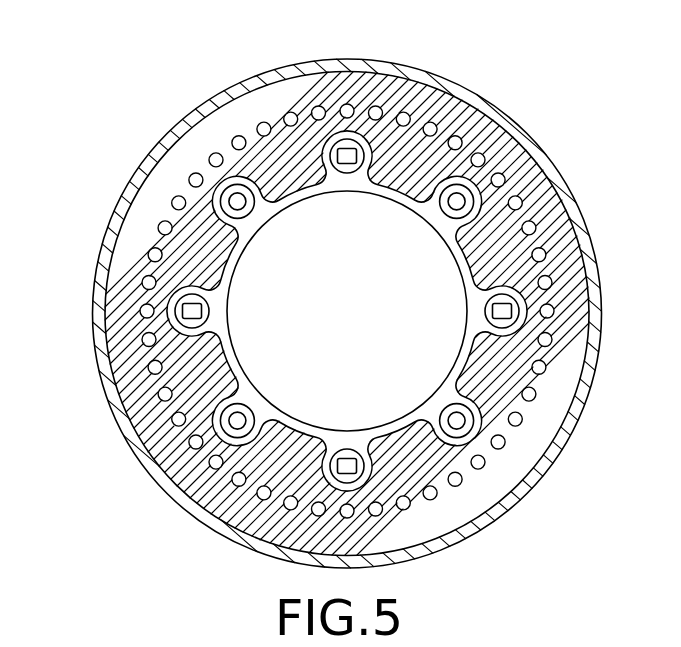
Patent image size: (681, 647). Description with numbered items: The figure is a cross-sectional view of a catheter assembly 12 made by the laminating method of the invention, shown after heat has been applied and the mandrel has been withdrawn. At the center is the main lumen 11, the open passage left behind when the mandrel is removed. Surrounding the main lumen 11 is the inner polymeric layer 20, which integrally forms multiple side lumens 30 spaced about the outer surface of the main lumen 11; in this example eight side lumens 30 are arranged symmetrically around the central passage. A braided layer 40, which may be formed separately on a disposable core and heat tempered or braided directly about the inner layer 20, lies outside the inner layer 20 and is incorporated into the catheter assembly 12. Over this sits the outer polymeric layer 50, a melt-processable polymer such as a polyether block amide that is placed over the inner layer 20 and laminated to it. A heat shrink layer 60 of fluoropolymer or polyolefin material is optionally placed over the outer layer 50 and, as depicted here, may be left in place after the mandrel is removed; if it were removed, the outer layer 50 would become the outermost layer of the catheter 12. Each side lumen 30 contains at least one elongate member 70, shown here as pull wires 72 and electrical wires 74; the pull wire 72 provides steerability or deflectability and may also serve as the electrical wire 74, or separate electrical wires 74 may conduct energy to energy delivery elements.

The catheter assembly 12 is at (148, 57).
The main lumen 11 is at (360, 309).
The inner polymeric layer 20 is at (378, 192).
The side lumens 30 is at (460, 200).
The braided layer 40 is at (545, 255).
The outer polymeric layer 50 is at (576, 368).
The heat shrink layer 60 is at (537, 468).
The elongate member 70 is at (133, 273).
The pull wire 72 is at (188, 314).
The electrical wire 74 is at (236, 201).